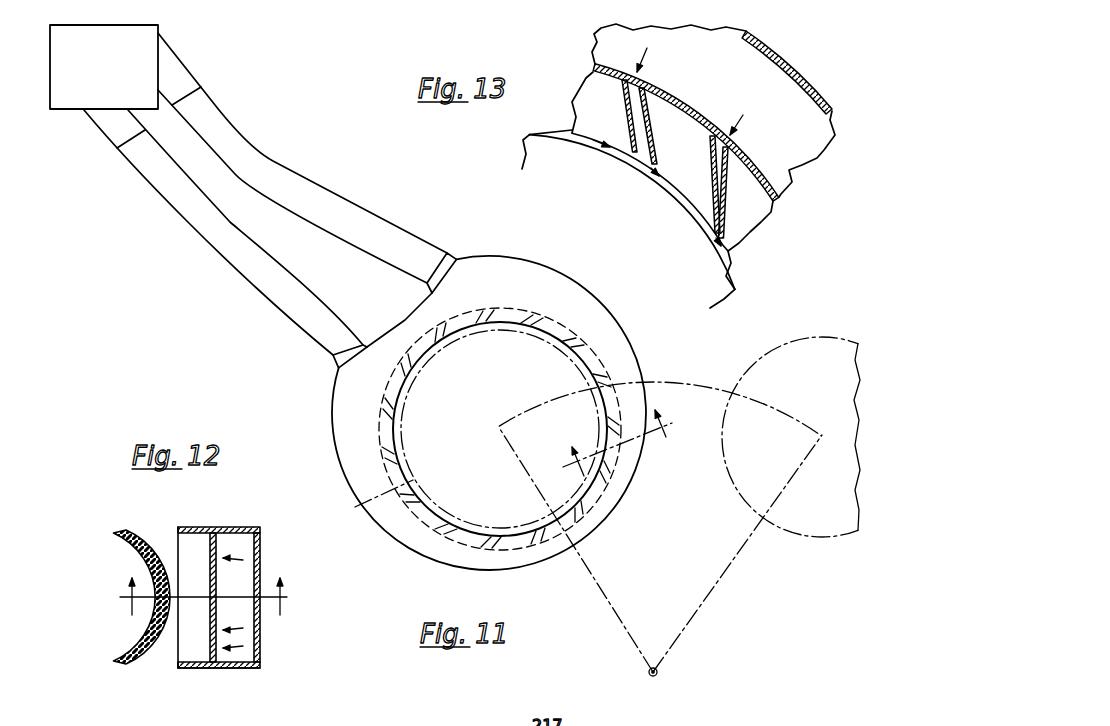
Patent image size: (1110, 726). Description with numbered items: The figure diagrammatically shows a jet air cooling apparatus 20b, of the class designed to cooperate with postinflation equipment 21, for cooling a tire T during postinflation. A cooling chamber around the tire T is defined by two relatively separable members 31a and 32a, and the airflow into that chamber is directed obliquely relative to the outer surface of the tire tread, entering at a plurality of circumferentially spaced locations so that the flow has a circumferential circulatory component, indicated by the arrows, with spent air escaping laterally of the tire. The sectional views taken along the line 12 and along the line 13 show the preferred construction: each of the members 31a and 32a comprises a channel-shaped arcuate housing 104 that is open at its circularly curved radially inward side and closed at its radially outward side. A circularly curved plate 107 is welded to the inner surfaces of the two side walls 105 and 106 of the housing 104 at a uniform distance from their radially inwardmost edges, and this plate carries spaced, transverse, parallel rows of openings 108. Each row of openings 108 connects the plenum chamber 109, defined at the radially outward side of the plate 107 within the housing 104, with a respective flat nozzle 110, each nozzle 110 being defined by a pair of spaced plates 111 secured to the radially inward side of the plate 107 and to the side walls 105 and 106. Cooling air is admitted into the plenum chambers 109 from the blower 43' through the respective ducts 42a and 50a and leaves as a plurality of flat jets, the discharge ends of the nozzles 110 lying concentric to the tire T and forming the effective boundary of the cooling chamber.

In FIG. 11, the blower 43' is at (128, 67).
In FIG. 11, the duct 50a is at (247, 152).
In FIG. 11, the duct 42a is at (192, 230).
In FIG. 11, the apparatus 20b is at (461, 382).
In FIG. 11, the relatively separable member 32a is at (578, 280).
In FIG. 13, the relatively separable member 32a is at (578, 280).
In FIG. 11, the relatively separable member 31a is at (333, 390).
In FIG. 11, the section line 12— 12 is at (617, 446).
In FIG. 12, the section line 13— 13 is at (200, 596).
In FIG. 11, the postinflation equipment 21 is at (720, 580).
In FIG. 11, the tire T is at (757, 360).
In FIG. 12, the tire T is at (138, 530).
In FIG. 13, the tire T is at (735, 281).
In FIG. 12, the channel-shaped arcuate housing 104 is at (258, 665).
In FIG. 13, the channel-shaped arcuate housing 104 is at (843, 68).
In FIG. 12, the side wall 105 is at (246, 507).
In FIG. 13, the side wall 105 is at (789, 170).
In FIG. 12, the side wall 106 is at (223, 670).
In FIG. 12, the circularly curved plate 107 is at (220, 548).
In FIG. 13, the circularly curved plate 107 is at (697, 100).
In FIG. 12, the openings 108 is at (208, 536).
In FIG. 13, the openings 108 is at (638, 78).
In FIG. 12, the plenum chamber 109 is at (247, 633).
In FIG. 13, the plenum chamber 109 is at (785, 138).
In FIG. 13, the flat nozzle 110 is at (714, 166).
In FIG. 12, the spaced plates 111 is at (185, 655).
In FIG. 13, the spaced plates 111 is at (630, 150).